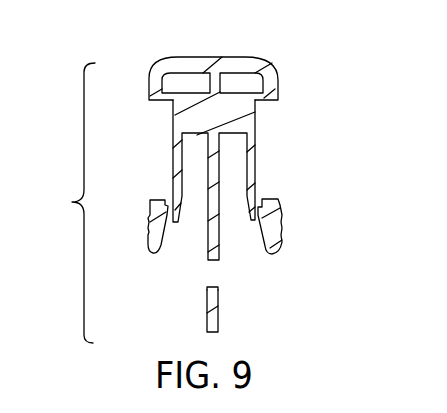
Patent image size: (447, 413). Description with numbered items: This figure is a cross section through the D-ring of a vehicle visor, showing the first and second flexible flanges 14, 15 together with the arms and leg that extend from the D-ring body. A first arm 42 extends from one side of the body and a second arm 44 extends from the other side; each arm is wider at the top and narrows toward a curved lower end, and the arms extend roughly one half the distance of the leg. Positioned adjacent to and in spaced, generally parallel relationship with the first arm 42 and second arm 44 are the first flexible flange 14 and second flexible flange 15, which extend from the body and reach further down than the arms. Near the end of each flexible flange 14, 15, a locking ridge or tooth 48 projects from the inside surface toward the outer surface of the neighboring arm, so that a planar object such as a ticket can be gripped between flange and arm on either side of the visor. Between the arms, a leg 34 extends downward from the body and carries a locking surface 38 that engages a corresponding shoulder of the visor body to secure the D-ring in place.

The first flexible flange 14 is at (148, 222).
The second flexible flange 15 is at (281, 223).
The leg 34 is at (208, 298).
The locking surface 38 is at (213, 287).
The first arm 42 is at (172, 143).
The second arm 44 is at (256, 143).
The locking ridge 48 is at (163, 203).